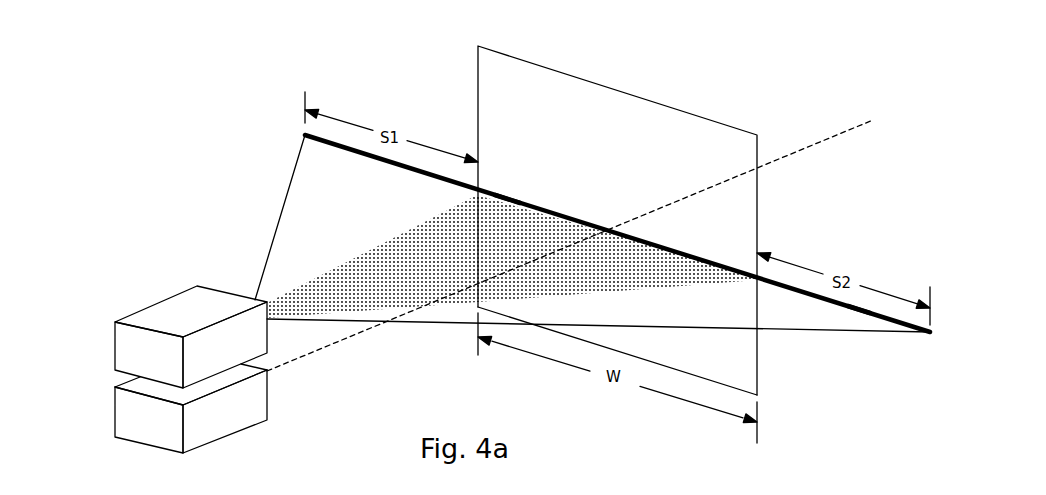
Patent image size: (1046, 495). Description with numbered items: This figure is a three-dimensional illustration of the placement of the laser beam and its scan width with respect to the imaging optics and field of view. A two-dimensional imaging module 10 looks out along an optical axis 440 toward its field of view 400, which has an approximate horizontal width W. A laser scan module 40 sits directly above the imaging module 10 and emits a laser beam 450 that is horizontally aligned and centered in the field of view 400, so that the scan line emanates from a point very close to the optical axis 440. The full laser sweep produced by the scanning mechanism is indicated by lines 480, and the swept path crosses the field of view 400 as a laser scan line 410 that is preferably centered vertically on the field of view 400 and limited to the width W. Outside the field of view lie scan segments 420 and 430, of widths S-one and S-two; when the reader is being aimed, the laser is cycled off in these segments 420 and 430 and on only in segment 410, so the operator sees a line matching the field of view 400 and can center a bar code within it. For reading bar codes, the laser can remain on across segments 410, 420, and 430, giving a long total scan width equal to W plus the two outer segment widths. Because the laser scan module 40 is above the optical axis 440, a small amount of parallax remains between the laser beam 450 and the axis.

The 2D imaging module 10 is at (137, 424).
The laser scan module 40 is at (168, 315).
The field of view 400 is at (685, 105).
The laser scan line 410 is at (505, 193).
The scan segment 420 is at (400, 172).
The scan segment 430 is at (858, 311).
The 2D optical axis 440 is at (783, 160).
The laser beam 450 is at (373, 270).
The lines 480 is at (278, 200).